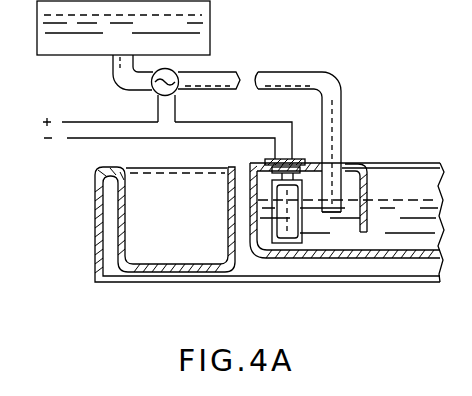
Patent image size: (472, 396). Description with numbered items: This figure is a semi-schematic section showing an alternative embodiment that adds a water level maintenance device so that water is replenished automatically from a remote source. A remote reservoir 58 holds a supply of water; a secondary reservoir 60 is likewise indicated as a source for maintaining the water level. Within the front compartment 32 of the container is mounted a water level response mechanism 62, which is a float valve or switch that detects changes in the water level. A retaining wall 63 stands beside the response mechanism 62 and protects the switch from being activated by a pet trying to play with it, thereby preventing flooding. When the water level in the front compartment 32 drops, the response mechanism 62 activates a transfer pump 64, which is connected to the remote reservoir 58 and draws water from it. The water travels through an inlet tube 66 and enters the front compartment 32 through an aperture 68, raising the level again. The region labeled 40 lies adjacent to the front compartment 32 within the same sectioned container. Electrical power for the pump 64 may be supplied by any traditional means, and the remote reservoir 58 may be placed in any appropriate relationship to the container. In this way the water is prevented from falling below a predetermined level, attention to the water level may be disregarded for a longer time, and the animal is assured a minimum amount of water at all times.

The remote reservoir 58 is at (211, 27).
The secondary reservoir 60 is at (452, 28).
The transfer pump 64 is at (156, 94).
The inlet tube 66 is at (338, 80).
The front compartment 32 is at (417, 182).
The container 40 is at (190, 230).
The retaining wall 63 is at (369, 192).
The water level response mechanism 62 is at (303, 233).
The aperture 68 is at (332, 213).